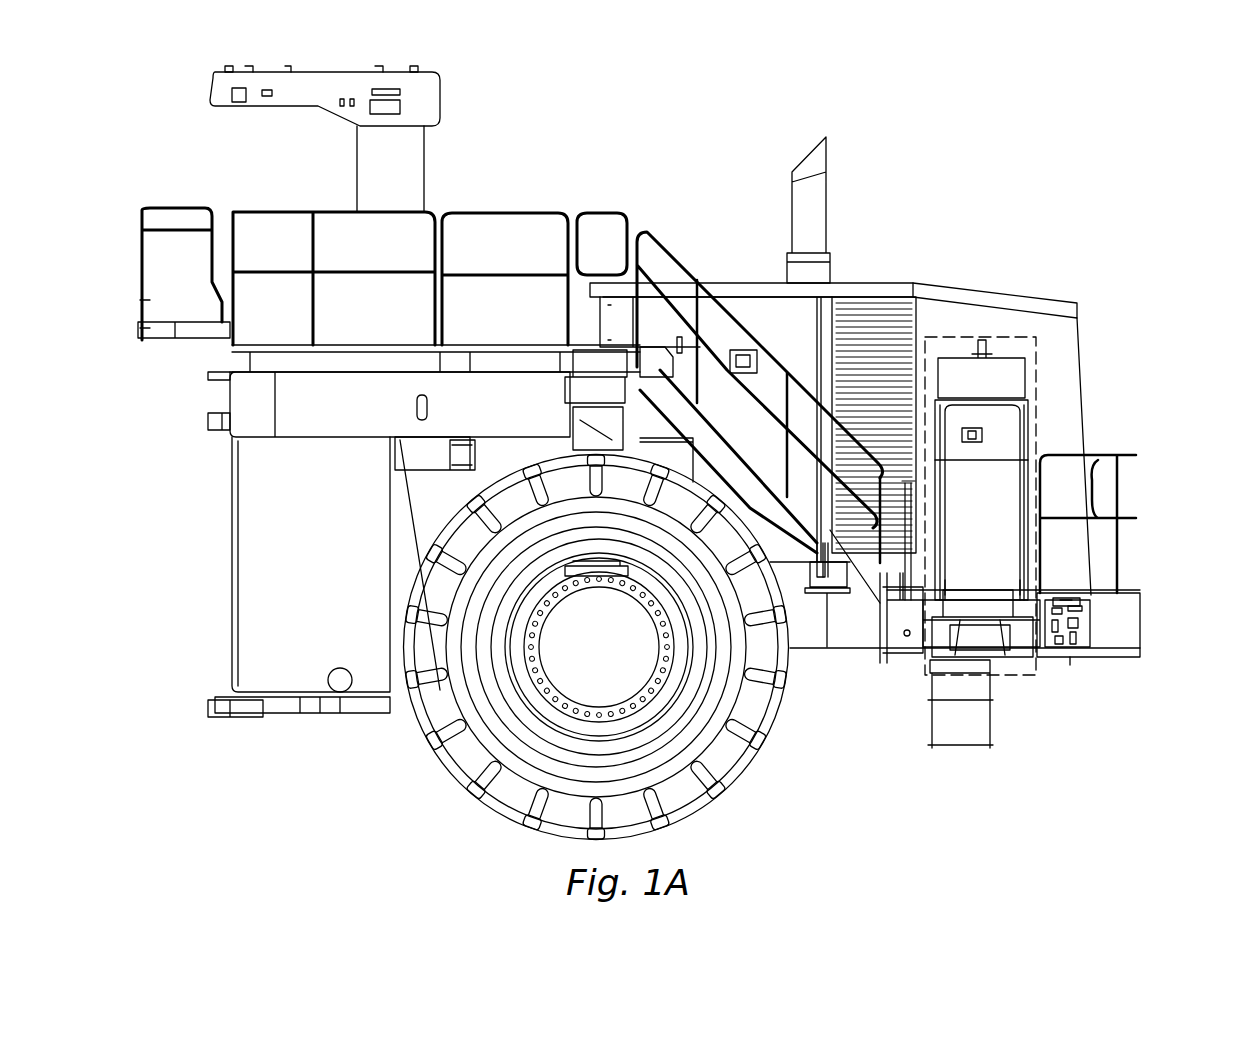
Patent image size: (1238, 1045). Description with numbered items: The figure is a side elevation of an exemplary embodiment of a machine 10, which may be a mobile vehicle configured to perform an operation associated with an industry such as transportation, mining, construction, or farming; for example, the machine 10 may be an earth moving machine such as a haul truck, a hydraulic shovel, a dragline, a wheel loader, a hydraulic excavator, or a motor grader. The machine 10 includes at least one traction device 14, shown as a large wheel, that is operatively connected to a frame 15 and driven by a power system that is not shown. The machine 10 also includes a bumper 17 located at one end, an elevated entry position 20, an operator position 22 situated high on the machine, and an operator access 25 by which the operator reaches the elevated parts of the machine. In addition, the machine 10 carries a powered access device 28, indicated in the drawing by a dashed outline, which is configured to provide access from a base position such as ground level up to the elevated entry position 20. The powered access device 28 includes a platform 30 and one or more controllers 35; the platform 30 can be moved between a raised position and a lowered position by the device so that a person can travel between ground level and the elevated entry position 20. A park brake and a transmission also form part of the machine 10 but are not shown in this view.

The machine 10 is at (953, 202).
The traction device 14 is at (723, 787).
The frame 15 is at (300, 707).
The bumper 17 is at (1120, 643).
The elevated entry position 20 is at (890, 657).
The operator position 22 is at (258, 144).
The operator access 25 is at (850, 595).
The powered access device 28 is at (1035, 338).
The platform 30 is at (993, 603).
The controller 35 is at (1090, 604).